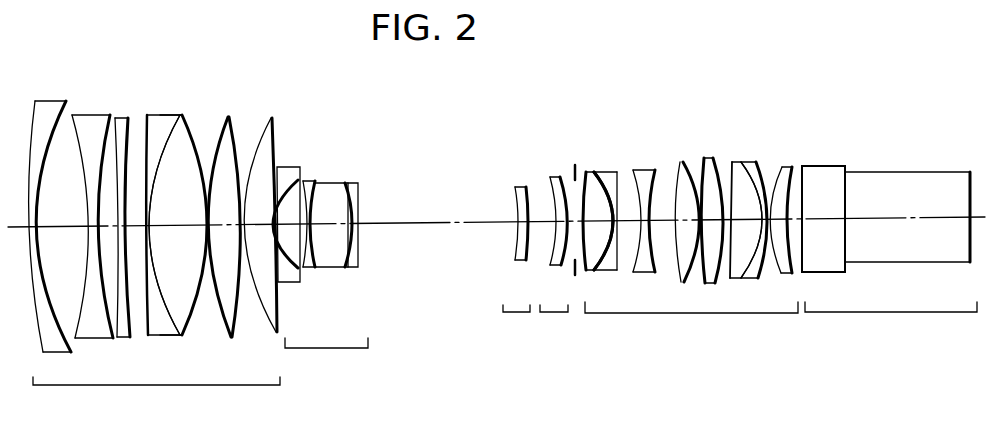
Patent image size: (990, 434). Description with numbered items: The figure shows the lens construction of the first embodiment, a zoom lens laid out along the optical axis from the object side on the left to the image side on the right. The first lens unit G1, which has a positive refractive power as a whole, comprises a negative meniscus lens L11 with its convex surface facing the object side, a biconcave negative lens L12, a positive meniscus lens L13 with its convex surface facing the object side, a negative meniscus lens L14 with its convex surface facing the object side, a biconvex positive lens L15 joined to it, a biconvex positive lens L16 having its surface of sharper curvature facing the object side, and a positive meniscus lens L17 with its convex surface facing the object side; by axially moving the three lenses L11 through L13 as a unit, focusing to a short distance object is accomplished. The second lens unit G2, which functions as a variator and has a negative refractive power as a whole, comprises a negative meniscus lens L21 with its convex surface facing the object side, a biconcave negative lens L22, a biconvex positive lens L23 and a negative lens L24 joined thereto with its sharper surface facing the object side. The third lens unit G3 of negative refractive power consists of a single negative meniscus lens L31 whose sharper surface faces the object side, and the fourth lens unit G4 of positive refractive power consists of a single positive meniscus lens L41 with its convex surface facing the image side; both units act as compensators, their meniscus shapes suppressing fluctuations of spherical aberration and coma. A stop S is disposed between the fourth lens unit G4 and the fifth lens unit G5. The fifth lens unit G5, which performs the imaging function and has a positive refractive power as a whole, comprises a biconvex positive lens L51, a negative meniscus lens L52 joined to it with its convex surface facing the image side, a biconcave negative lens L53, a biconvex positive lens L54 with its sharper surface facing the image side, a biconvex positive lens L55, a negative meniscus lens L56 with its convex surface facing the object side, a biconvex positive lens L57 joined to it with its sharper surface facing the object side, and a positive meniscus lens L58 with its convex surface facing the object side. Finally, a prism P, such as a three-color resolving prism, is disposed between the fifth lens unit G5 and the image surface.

The negative meniscus lens L11 is at (46, 104).
The biconcave negative lens L12 is at (90, 116).
The positive meniscus lens L13 is at (125, 117).
The negative meniscus lens L14 is at (157, 115).
The biconvex positive lens L15 is at (185, 117).
The biconvex positive lens L16 is at (227, 127).
The positive meniscus lens L17 is at (264, 128).
The negative meniscus lens L21 is at (286, 164).
The biconcave negative lens L22 is at (312, 178).
The biconvex positive lens L23 is at (328, 181).
The negative lens L24 is at (352, 181).
The negative meniscus lens L31 is at (518, 187).
The positive meniscus lens L41 is at (551, 177).
The biconvex positive lens L51 is at (589, 172).
The negative meniscus lens L52 is at (607, 172).
The biconcave negative lens L53 is at (643, 171).
The biconvex positive lens L54 is at (682, 162).
The biconvex positive lens L55 is at (709, 161).
The negative meniscus lens L56 is at (742, 162).
The biconvex positive lens L57 is at (758, 166).
The positive meniscus lens L58 is at (793, 164).
The first lens unit G1 is at (163, 228).
The second lens unit G2 is at (350, 239).
The third lens unit G3 is at (509, 236).
The fourth lens unit G4 is at (543, 221).
The fifth lens unit G5 is at (710, 221).
The stop S is at (575, 275).
The prism P is at (889, 255).